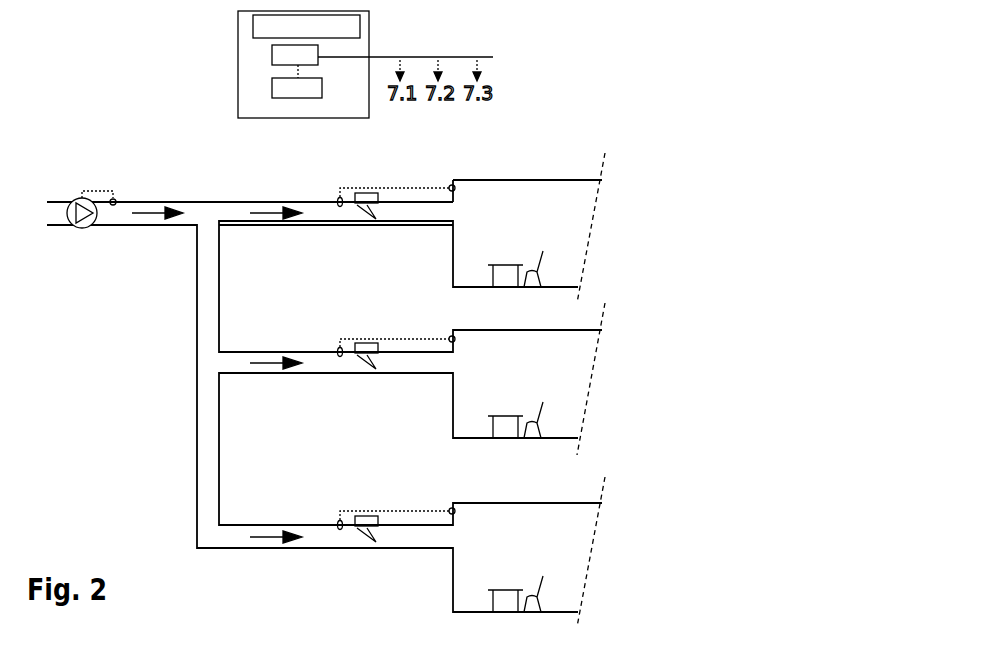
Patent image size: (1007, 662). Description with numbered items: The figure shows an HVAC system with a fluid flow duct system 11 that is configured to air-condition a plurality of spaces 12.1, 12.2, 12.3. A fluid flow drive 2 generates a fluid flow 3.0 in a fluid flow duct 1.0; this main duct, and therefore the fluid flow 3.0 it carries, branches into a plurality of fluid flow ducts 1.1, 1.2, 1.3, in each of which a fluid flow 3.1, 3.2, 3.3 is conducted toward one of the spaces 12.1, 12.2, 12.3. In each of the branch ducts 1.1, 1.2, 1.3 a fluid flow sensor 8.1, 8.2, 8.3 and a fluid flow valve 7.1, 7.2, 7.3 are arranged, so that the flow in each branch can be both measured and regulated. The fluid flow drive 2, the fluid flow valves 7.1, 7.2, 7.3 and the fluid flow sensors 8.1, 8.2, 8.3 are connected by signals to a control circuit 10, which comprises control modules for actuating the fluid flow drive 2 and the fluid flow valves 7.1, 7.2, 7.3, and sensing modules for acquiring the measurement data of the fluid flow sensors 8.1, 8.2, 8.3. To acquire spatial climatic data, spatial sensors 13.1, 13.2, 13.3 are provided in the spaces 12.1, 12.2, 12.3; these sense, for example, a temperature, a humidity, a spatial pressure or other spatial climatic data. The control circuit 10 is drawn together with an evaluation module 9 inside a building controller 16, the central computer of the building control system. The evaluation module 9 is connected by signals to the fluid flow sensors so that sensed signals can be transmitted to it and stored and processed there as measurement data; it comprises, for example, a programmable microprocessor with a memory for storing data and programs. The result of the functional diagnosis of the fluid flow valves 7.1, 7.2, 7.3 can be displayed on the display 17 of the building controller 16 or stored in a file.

The fluid flow drive 2 is at (79, 171).
The building controller 16 is at (238, 107).
The display 17 is at (253, 22).
The control circuit 10 is at (272, 55).
The evaluation module 9 is at (272, 80).
The fluid flow valve 7.1 is at (380, 199).
The fluid flow valve 7.2 is at (380, 349).
The fluid flow valve 7.3 is at (380, 522).
The fluid flow sensor 8.1 is at (340, 197).
The fluid flow sensor 8.2 is at (340, 347).
The fluid flow sensor 8.3 is at (340, 520).
The spatial sensor 13.1 is at (450, 184).
The spatial sensor 13.2 is at (452, 336).
The spatial sensor 13.3 is at (451, 508).
The space 12.1 is at (578, 199).
The space 12.2 is at (578, 360).
The space 12.3 is at (578, 532).
The fluid flow 3.0 is at (152, 199).
The fluid flow 3.1 is at (270, 208).
The fluid flow 3.2 is at (270, 360).
The fluid flow 3.3 is at (270, 533).
The fluid flow duct 1.0 is at (115, 218).
The fluid flow duct 1.1 is at (240, 215).
The fluid flow duct 1.2 is at (243, 372).
The fluid flow duct 1.3 is at (243, 540).
The fluid flow duct system 11 is at (140, 346).